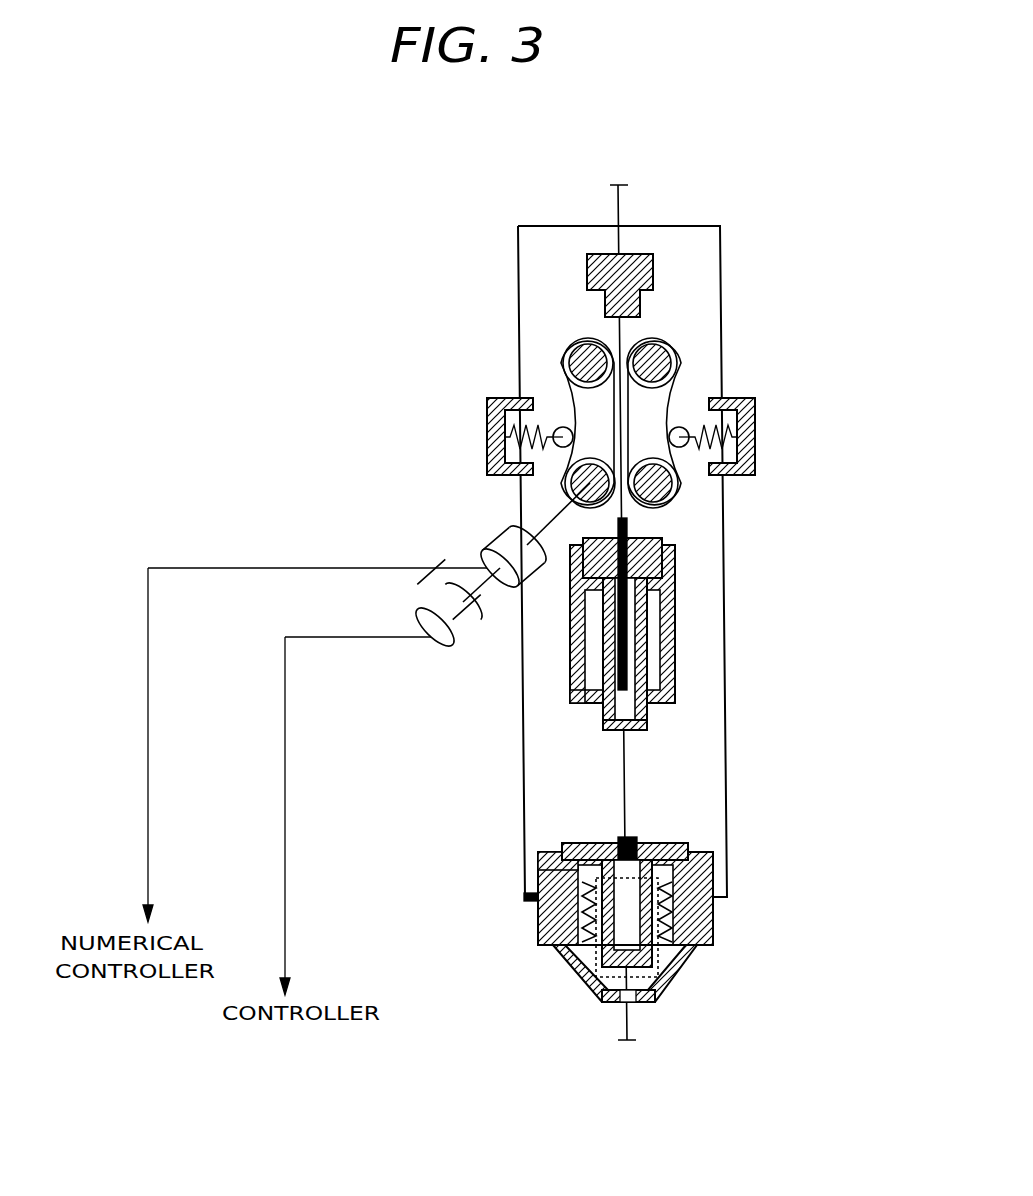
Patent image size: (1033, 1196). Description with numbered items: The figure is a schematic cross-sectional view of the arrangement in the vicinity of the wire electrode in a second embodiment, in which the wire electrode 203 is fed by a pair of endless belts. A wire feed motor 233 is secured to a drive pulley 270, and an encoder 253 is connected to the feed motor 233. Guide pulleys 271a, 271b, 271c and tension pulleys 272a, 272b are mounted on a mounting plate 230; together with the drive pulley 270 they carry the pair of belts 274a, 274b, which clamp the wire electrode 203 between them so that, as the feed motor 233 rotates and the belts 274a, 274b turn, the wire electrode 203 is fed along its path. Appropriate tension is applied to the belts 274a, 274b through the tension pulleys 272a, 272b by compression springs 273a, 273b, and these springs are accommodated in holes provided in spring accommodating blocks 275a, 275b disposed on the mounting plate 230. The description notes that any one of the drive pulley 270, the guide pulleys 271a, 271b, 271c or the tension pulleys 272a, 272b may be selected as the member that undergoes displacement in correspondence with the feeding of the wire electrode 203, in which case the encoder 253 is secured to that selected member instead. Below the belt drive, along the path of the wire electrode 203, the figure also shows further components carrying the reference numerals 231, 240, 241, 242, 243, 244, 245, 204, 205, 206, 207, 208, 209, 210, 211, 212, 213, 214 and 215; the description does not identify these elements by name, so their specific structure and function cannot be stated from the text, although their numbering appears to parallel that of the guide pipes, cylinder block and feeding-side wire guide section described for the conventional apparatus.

The wire electrode 203 is at (620, 206).
The nozzle unit 204 is at (666, 882).
The nozzle body 205 is at (713, 900).
The top plate 206 is at (688, 845).
The nozzle 207 is at (672, 975).
The wire guide die 208 is at (630, 840).
The guide sleeve 209 is at (600, 850).
The sleeve 210 is at (590, 975).
The spring 211 is at (672, 920).
The nozzle tip 212 is at (603, 998).
The cover plate 213 is at (560, 853).
The spring 214 is at (585, 910).
The fastener 215 is at (528, 897).
The mounting plate 230 is at (690, 227).
The wire guide 231 is at (598, 254).
The wire feed motor 233 is at (505, 550).
The shaft 240 is at (628, 520).
The sleeve bottom 241 is at (647, 725).
The cap 242 is at (662, 560).
The inner sleeve 243 is at (676, 640).
The housing 244 is at (570, 600).
The housing base 245 is at (570, 698).
The encoder 253 is at (430, 622).
The drive pulley 270 is at (568, 490).
The guide pulley 271a is at (577, 345).
The guide pulley 271b is at (663, 345).
The guide pulley 271c is at (672, 490).
The tension pulley 272a is at (555, 443).
The tension pulley 272b is at (685, 443).
The compression spring 273a is at (492, 400).
The compression spring 273b is at (746, 400).
The belt 274a is at (565, 385).
The belt 274b is at (675, 385).
The spring accommodating block 275a is at (494, 428).
The spring accommodating block 275b is at (746, 425).